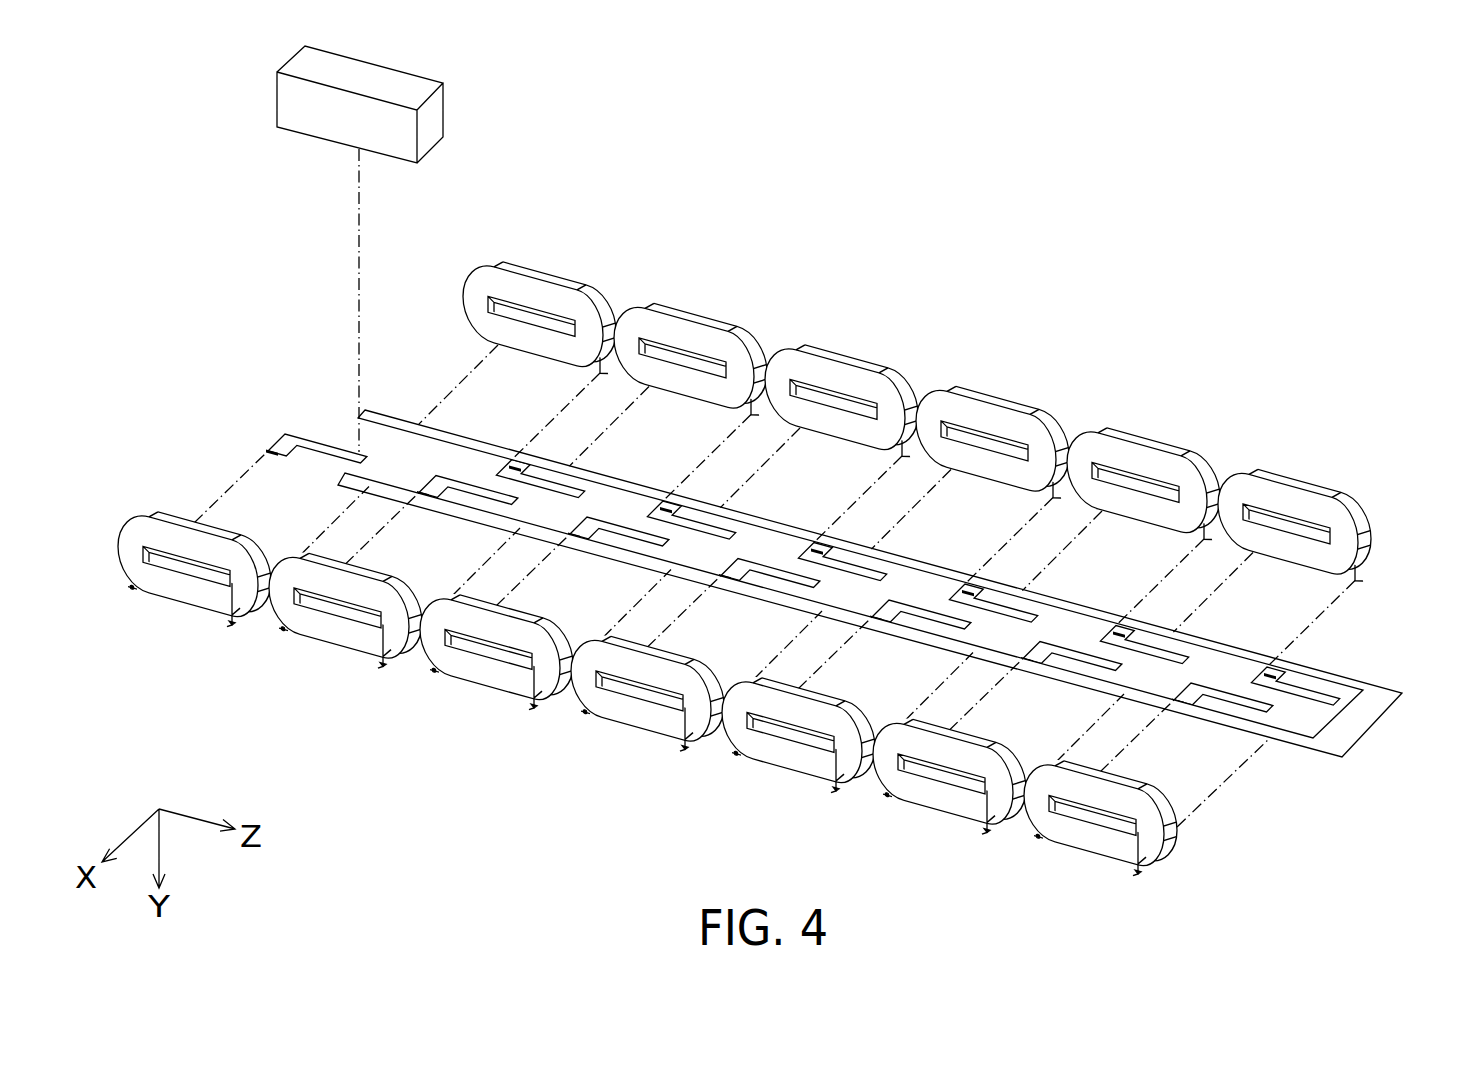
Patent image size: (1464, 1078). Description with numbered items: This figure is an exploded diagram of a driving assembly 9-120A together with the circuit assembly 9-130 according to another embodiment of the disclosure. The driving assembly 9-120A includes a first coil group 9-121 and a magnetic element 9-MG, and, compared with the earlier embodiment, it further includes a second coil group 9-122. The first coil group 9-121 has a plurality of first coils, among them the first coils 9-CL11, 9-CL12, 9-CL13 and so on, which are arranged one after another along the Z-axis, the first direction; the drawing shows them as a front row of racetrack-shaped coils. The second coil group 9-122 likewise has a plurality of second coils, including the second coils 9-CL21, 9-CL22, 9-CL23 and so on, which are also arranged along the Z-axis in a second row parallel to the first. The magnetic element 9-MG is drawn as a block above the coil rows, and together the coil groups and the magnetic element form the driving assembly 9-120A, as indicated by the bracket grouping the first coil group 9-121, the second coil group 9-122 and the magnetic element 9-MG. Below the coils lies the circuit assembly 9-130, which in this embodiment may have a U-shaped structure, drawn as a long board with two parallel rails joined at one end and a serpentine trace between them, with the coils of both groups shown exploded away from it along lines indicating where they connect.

The driving assembly 9-120A is at (1184, 78).
The first coil group 9-121 is at (1052, 937).
The second coil group 9-122 is at (1412, 388).
The magnetic element 9-MG is at (308, 106).
The circuit assembly 9-130 is at (1388, 688).
The first coil 9-CL11 is at (186, 590).
The first coil 9-CL12 is at (336, 634).
The first coil 9-CL13 is at (484, 675).
The second coil 9-CL21 is at (548, 285).
The second coil 9-CL22 is at (700, 318).
The second coil 9-CL23 is at (850, 358).